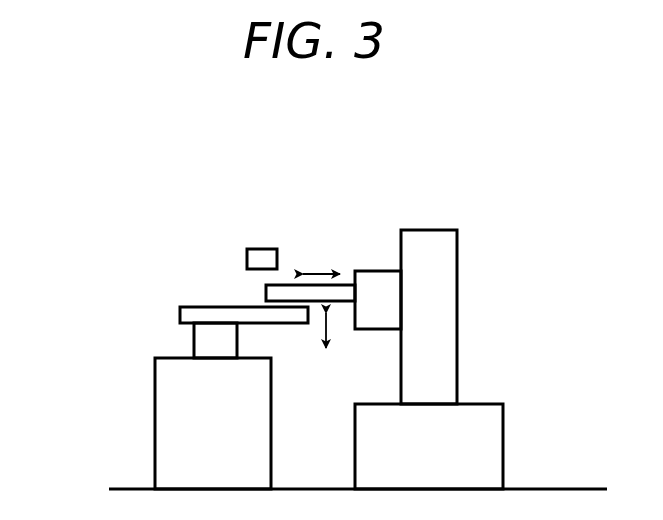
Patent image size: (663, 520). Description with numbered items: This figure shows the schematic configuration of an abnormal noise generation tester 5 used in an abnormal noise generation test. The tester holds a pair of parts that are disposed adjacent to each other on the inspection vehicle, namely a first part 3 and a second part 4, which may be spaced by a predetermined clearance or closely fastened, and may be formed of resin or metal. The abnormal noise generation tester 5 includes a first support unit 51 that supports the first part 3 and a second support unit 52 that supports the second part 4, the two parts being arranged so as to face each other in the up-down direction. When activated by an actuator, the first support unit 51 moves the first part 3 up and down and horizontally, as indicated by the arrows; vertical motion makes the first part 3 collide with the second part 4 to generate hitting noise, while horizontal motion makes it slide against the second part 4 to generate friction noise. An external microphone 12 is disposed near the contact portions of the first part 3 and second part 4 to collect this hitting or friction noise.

The first part 3 is at (283, 284).
The second part 4 is at (205, 306).
The abnormal noise generation tester 5 is at (451, 311).
The external microphone 12 is at (262, 248).
The first support unit 51 is at (460, 317).
The second support unit 52 is at (152, 356).